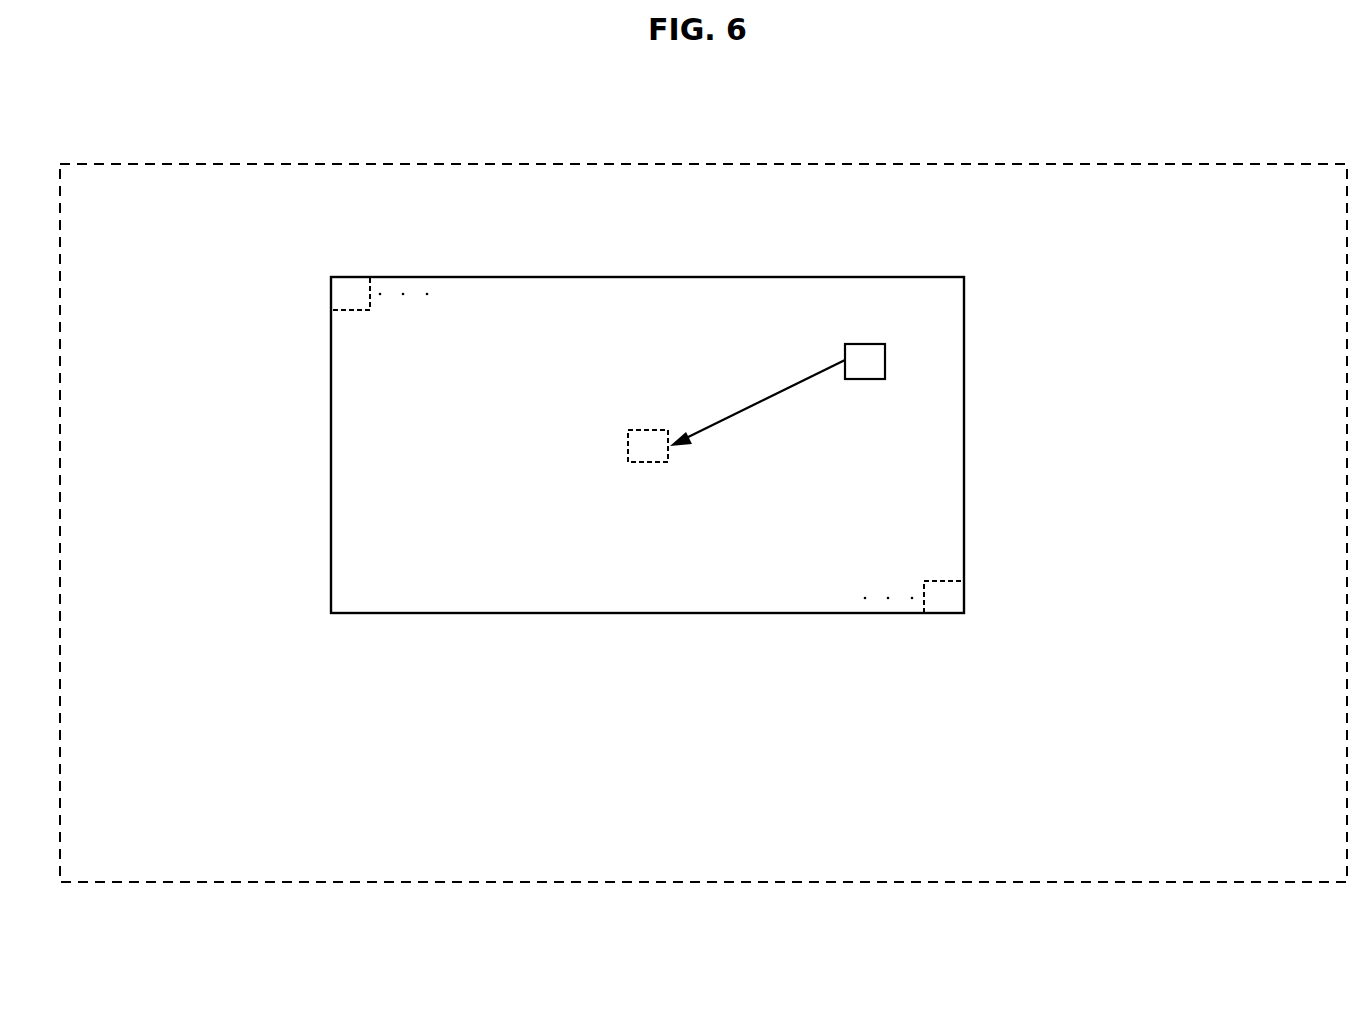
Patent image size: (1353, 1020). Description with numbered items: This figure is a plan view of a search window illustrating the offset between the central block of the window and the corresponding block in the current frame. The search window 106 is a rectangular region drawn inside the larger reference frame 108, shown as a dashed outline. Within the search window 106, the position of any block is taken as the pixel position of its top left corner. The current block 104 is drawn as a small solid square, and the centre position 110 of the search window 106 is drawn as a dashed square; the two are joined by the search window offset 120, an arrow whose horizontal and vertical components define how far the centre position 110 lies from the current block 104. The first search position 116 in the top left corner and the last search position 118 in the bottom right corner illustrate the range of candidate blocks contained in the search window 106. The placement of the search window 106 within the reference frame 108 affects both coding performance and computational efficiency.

The current block 104 is at (867, 370).
The search window 106 is at (424, 577).
The reference frame 108 is at (233, 812).
The centre position 110 is at (635, 442).
The first search position 116 is at (346, 290).
The last search position 118 is at (938, 598).
The search window offset 120 is at (771, 393).